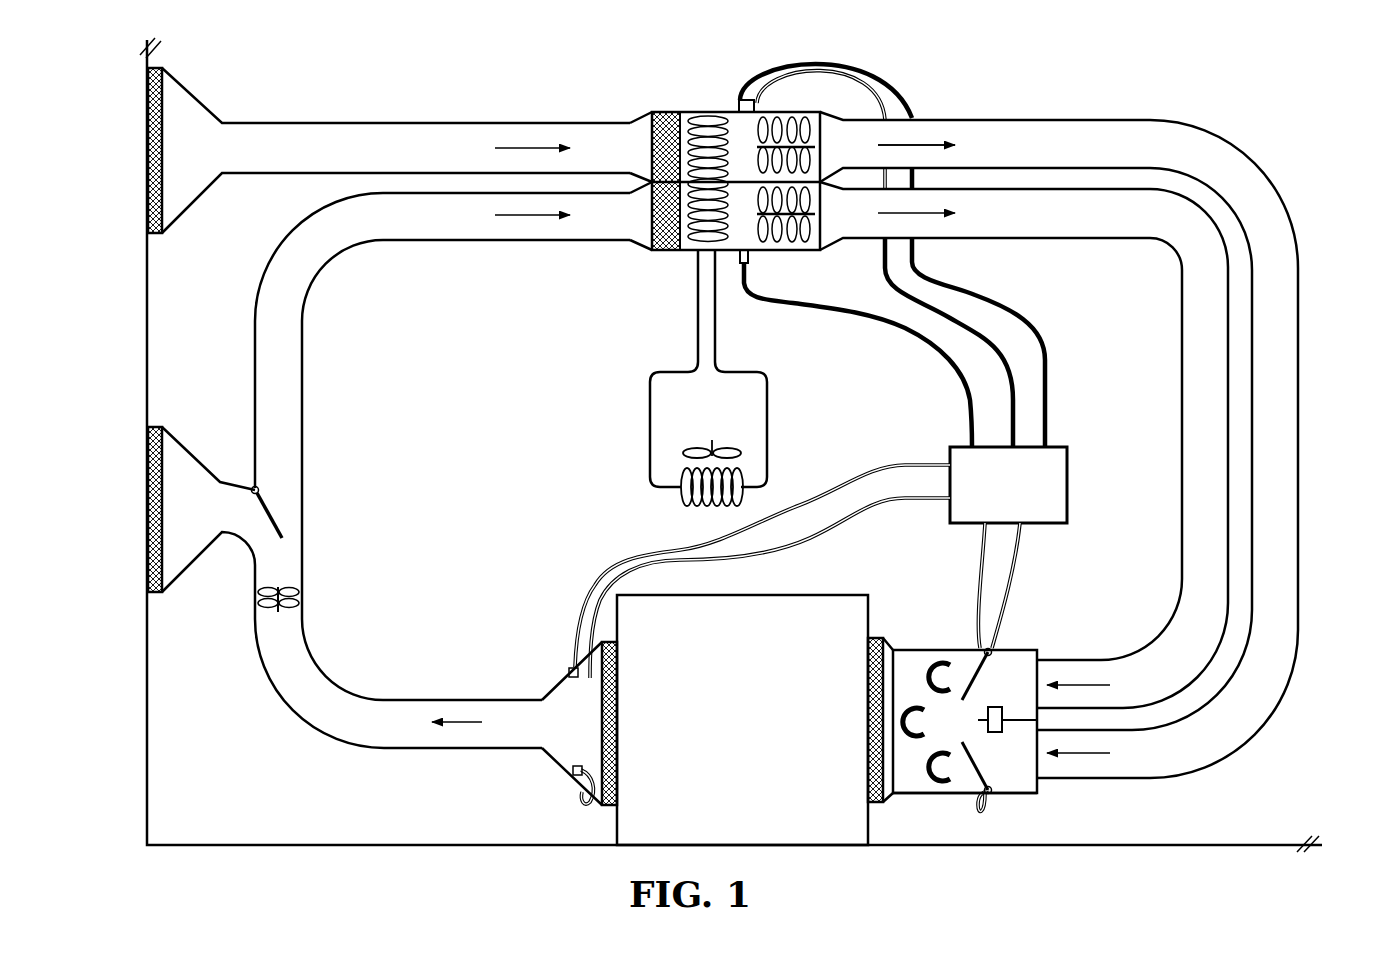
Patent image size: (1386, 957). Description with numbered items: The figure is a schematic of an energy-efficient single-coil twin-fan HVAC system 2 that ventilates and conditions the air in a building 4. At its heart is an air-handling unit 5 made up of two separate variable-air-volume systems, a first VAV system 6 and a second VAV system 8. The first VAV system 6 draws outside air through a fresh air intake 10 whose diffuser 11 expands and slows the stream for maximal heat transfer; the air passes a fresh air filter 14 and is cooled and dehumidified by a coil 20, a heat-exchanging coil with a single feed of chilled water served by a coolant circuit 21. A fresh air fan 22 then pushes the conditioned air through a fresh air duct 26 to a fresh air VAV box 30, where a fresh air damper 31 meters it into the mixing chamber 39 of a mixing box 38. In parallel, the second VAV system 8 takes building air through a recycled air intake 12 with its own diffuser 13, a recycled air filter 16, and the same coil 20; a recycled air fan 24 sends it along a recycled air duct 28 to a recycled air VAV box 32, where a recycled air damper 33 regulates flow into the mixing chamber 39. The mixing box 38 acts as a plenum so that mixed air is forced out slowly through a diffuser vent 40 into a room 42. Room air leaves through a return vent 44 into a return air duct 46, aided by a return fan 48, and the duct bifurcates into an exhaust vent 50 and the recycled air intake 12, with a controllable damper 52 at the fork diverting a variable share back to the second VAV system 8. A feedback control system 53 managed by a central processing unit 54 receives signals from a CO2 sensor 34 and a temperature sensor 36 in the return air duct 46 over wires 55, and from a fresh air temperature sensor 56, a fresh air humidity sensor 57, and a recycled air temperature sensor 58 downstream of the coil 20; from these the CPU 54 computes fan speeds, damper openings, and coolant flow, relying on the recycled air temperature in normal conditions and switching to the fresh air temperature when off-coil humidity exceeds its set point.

The HVAC system 2 is at (1325, 95).
The building 4 is at (147, 728).
The air-handling unit 5 is at (700, 102).
The first VAV system 6 is at (846, 100).
The second VAV system 8 is at (831, 290).
The fresh air intake 10 is at (195, 98).
The diffuser 11 is at (641, 120).
The recycled air intake 12 is at (350, 240).
The diffuser 13 is at (642, 243).
The fresh air filter 14 is at (670, 116).
The recycled air filter 16 is at (670, 248).
The coil 20 is at (718, 118).
The coolant circuit 21 is at (650, 410).
The fresh air fan 22 is at (792, 118).
The recycled air fan 24 is at (778, 250).
The fresh air duct 26 is at (1075, 119).
The recycled air duct 28 is at (1075, 241).
The fresh air VAV box 30 is at (1010, 780).
The fresh air damper 31 is at (972, 762).
The recycled air VAV box 32 is at (1018, 655).
The recycled air damper 33 is at (966, 682).
The CO2 sensor 34 is at (573, 772).
The temperature sensor 36 is at (569, 670).
The mixing box 38 is at (1030, 795).
The mixing chamber 39 is at (940, 660).
The diffuser vent 40 is at (878, 803).
The room 42 is at (760, 628).
The return vent 44 is at (566, 703).
The return air duct 46 is at (346, 697).
The return fan 48 is at (296, 590).
The exhaust vent 50 is at (148, 480).
The controllable damper 52 is at (278, 526).
The control system 53 is at (1052, 457).
The central processing unit 54 is at (1008, 485).
The wires 55 is at (1003, 362).
The fresh air temperature sensor 56 is at (770, 80).
The fresh air humidity sensor 57 is at (741, 99).
The recycled air temperature sensor 58 is at (744, 265).